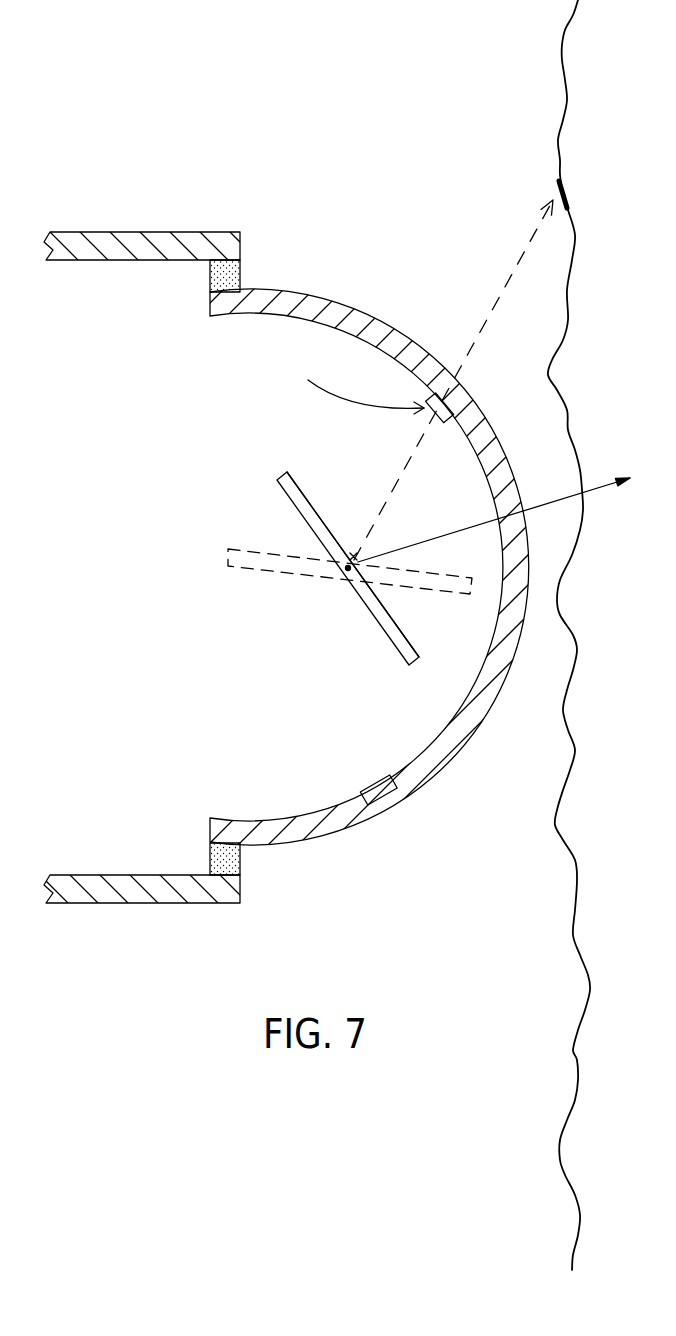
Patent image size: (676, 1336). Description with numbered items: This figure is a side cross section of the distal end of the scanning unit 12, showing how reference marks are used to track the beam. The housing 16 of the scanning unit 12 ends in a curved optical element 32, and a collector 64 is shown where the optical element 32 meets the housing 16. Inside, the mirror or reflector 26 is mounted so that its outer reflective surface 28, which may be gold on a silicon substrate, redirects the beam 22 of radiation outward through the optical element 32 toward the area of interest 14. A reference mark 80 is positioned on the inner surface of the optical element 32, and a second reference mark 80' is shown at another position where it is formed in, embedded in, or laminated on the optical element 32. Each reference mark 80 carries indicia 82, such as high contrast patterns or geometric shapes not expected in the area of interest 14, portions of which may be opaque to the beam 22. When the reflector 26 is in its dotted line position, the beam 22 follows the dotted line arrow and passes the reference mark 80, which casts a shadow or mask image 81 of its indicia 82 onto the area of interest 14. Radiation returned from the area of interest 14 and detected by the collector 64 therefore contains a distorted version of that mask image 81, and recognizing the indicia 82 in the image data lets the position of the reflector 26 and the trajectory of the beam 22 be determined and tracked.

The scanning unit 12 is at (131, 236).
The housing 16 is at (100, 880).
The collector 64 is at (243, 277).
The optical element 32 is at (385, 333).
The reference mark 80 is at (481, 396).
The reference mark 80' is at (414, 826).
The indicia 82 is at (347, 393).
The reflector 26 is at (298, 500).
The outer reflective surface 28 is at (405, 627).
The beam 22 is at (492, 311).
The area of interest 14 is at (579, 470).
The mask image 81 is at (568, 186).